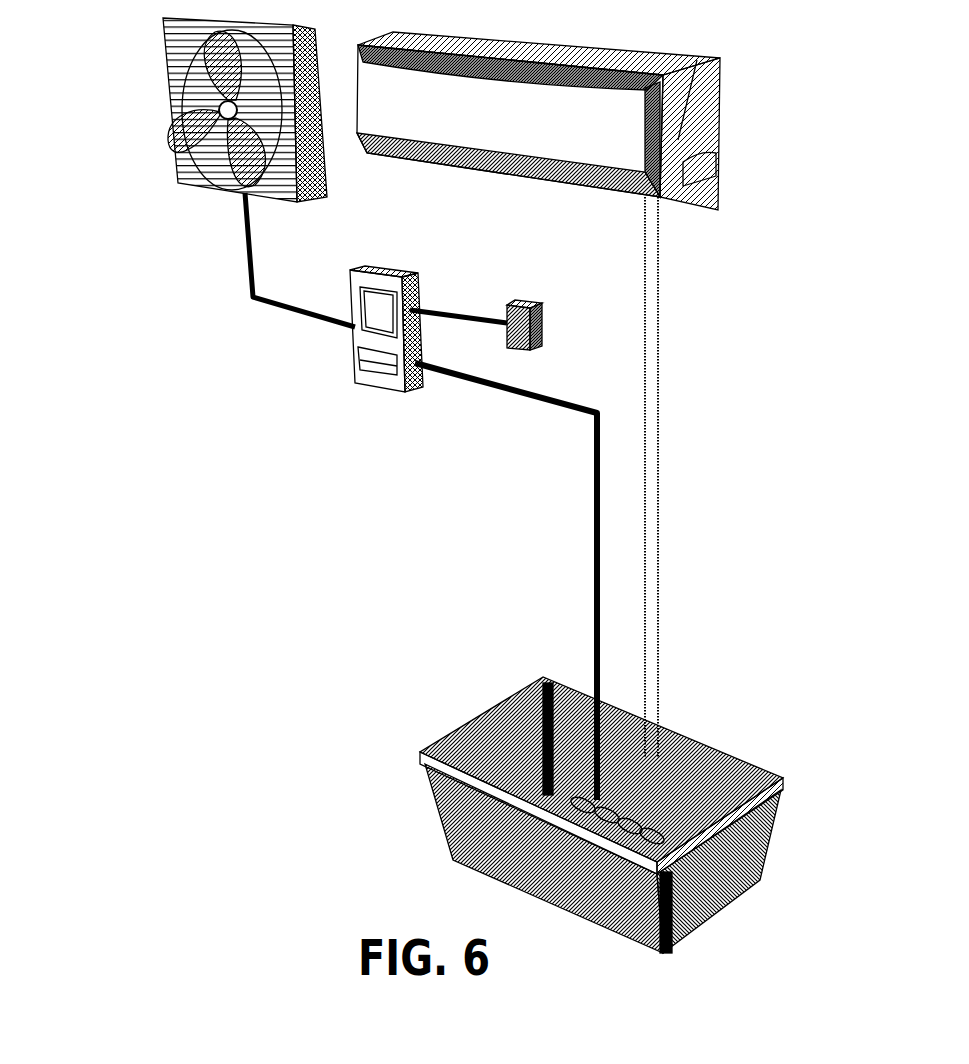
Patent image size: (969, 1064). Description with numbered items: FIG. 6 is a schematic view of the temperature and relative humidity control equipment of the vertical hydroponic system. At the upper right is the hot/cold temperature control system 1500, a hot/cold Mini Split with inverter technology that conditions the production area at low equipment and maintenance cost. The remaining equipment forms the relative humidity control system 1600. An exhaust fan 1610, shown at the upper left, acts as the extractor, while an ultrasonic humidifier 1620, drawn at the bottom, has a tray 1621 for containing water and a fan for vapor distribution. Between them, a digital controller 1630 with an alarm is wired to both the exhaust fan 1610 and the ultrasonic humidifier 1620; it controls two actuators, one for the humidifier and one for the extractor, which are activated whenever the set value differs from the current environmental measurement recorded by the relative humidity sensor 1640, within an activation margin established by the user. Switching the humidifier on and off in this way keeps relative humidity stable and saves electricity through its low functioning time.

The hot/cold temperature control system with inverter technology 1500 is at (720, 158).
The relative humidity control system 1600 is at (318, 372).
The exhaust fan 1610 is at (170, 147).
The ultrasonic humidifier 1620 is at (614, 780).
The tray 1621 is at (747, 748).
The digital controller 1630 is at (388, 392).
The relative humidity sensor 1640 is at (522, 295).